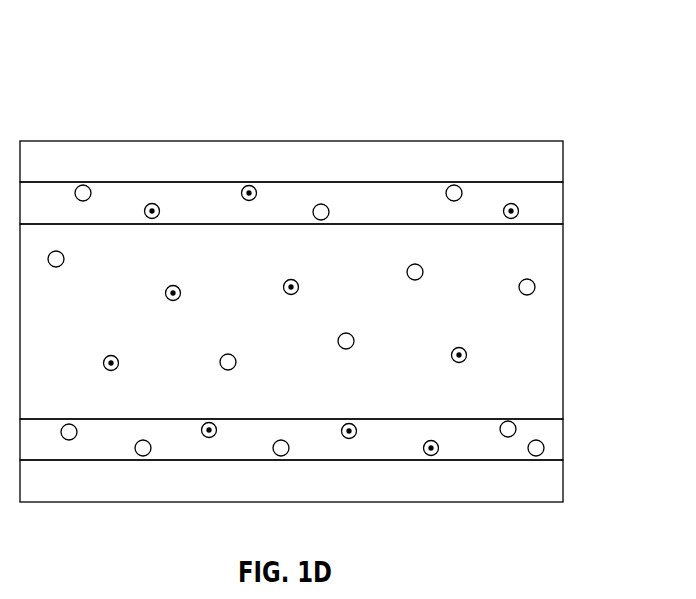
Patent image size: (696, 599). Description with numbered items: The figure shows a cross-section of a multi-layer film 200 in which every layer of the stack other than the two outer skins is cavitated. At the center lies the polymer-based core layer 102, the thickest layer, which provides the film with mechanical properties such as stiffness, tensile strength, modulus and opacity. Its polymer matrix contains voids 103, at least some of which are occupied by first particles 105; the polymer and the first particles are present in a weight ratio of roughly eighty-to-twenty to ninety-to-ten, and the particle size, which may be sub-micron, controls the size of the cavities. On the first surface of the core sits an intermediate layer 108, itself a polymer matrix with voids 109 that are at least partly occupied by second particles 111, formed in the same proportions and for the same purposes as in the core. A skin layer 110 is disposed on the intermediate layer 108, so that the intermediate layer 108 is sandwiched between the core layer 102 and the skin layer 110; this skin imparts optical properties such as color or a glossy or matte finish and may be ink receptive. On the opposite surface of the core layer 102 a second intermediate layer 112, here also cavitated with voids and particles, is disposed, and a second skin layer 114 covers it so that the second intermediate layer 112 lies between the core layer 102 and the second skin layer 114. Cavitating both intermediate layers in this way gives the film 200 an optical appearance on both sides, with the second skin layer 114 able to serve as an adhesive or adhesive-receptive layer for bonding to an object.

The multi-layer film 200 is at (646, 30).
The skin layer 110 is at (554, 161).
The intermediate layer 108 is at (554, 203).
The voids 109 is at (447, 188).
The second particles 111 is at (243, 188).
The polymer-based core layer 102 is at (554, 334).
The voids 103 is at (423, 269).
The first particles 105 is at (467, 352).
The second intermediate layer 112 is at (554, 440).
The second skin layer 114 is at (554, 482).